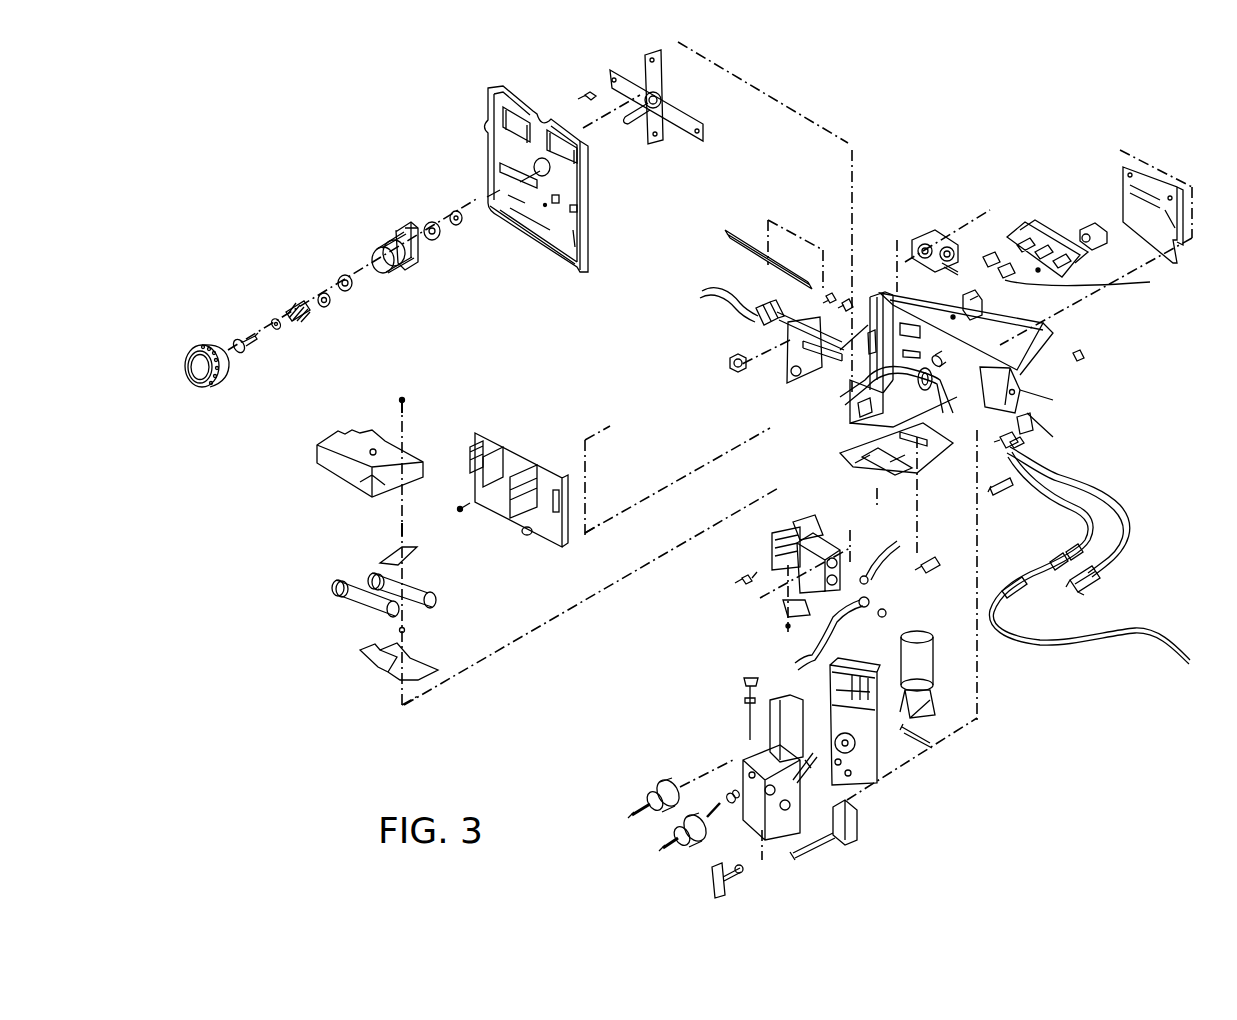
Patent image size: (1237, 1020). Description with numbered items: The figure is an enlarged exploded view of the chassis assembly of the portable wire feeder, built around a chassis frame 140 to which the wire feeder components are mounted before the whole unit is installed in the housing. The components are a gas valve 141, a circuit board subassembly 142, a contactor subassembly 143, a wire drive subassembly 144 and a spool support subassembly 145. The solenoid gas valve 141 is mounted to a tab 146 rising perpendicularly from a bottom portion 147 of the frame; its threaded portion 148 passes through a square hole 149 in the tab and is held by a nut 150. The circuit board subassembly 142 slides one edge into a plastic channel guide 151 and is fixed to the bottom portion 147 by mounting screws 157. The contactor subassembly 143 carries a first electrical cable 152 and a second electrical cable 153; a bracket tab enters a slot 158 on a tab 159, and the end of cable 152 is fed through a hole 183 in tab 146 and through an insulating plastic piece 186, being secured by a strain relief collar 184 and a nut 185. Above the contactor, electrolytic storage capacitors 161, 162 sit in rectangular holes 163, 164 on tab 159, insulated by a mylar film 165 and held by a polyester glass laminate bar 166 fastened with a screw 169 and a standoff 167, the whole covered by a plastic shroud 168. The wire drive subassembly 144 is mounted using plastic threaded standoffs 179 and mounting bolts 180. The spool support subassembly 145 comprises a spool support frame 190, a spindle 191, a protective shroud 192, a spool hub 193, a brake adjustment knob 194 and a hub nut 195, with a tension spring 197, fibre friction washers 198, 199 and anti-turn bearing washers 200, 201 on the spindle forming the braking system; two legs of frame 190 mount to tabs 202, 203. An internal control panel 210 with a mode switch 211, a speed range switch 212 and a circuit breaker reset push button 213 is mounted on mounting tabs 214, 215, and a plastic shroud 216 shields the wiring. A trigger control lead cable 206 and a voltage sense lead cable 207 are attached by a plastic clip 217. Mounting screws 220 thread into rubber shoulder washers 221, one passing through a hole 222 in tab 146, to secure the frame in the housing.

The chassis frame 140 is at (945, 360).
The gas valve 141 is at (951, 238).
The circuit board subassembly 142 is at (521, 452).
The contactor subassembly 143 is at (755, 618).
The wire drive subassembly 144 is at (820, 764).
The spool support subassembly 145 is at (268, 127).
The tab 146 is at (838, 342).
The bottom portion 147 is at (1020, 424).
The threaded portion 148 is at (917, 247).
The square hole 149 is at (845, 404).
The nut 150 is at (733, 361).
The plastic channel guide 151 is at (752, 240).
The first electrical cable 152 is at (745, 295).
The second electrical cable 153 is at (800, 660).
The mounting screws 157 is at (461, 511).
The slot 158 is at (905, 425).
The tab 159 is at (831, 451).
The electrolytic storage capacitor 161 is at (351, 599).
The electrolytic storage capacitor 162 is at (405, 590).
The rectangular hole 163 is at (898, 469).
The rectangular hole 164 is at (858, 467).
The mylar film 165 is at (386, 660).
The polyester glass laminate bar 166 is at (415, 549).
The standoff 167 is at (406, 630).
The plastic shroud 168 is at (340, 468).
The screw 169 is at (400, 530).
The plastic threaded standoff 179 is at (1003, 493).
The mounting bolt 180 is at (810, 847).
The hole 183 is at (848, 398).
The strain relief collar 184 is at (975, 421).
The nut 185 is at (853, 362).
The insulating plastic piece 186 is at (796, 380).
The spool support frame 190 is at (688, 128).
The spindle 191 is at (633, 118).
The protective shroud 192 is at (496, 103).
The spool hub 193 is at (404, 270).
The brake adjustment knob 194 is at (250, 352).
The hub nut 195 is at (202, 346).
The tension spring 197 is at (292, 306).
The fibre friction washer 198 is at (328, 306).
The fibre friction washer 199 is at (428, 224).
The anti-turn bearing washer 200 is at (340, 277).
The anti-turn bearing washer 201 is at (457, 226).
The tab 202 is at (870, 335).
The tab 203 is at (907, 338).
The trigger control lead cable 206 is at (1115, 560).
The voltage sense lead cable 207 is at (1090, 527).
The internal control panel 210 is at (1093, 168).
The switch 211 is at (984, 266).
The switch 212 is at (1062, 262).
The circuit breaker reset push button 213 is at (1103, 240).
The mounting tab 214 is at (940, 360).
The mounting tab 215 is at (985, 376).
The plastic shroud 216 is at (1150, 190).
The plastic clip 217 is at (1024, 438).
The mounting screw 220 is at (827, 296).
The rubber shoulder washer 221 is at (845, 300).
The hole 222 is at (873, 343).